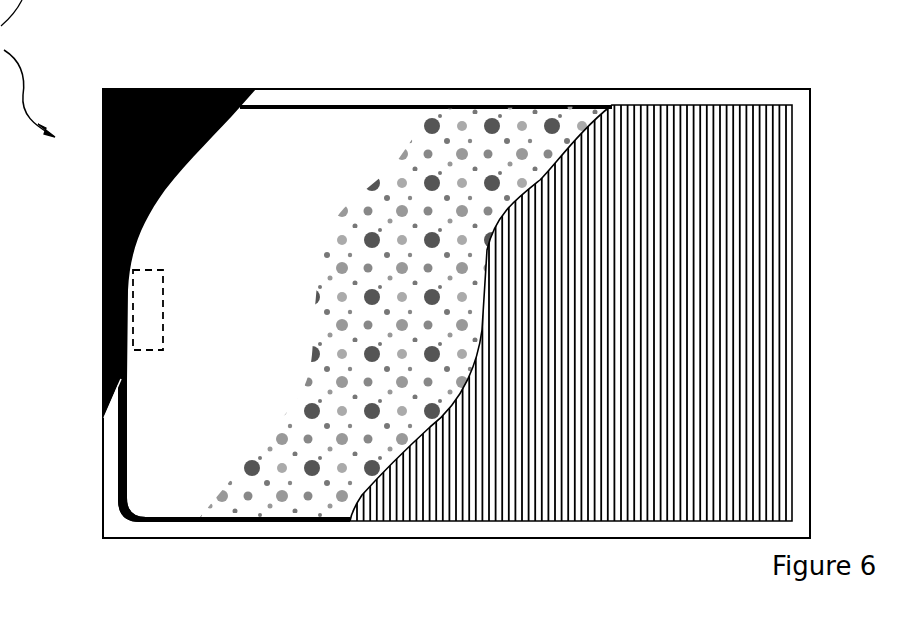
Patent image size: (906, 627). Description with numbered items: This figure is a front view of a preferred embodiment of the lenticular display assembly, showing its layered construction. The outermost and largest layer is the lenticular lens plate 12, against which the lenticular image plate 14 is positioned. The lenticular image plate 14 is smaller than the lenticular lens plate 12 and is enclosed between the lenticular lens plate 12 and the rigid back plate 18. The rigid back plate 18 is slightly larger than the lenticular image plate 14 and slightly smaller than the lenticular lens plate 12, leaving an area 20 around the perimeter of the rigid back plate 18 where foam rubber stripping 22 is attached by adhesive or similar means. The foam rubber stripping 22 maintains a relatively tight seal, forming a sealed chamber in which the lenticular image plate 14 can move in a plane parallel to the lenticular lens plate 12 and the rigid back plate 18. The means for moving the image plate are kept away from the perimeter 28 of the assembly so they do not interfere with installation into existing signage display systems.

The lenticular lens plate 12 is at (432, 520).
The lenticular image plate 14 is at (292, 493).
The rigid back plate 18 is at (143, 88).
The area around the perimeter of the rigid back plate 20 is at (177, 533).
The foam rubber stripping 22 is at (312, 105).
The perimeter of the lenticular display assembly 28 is at (451, 538).